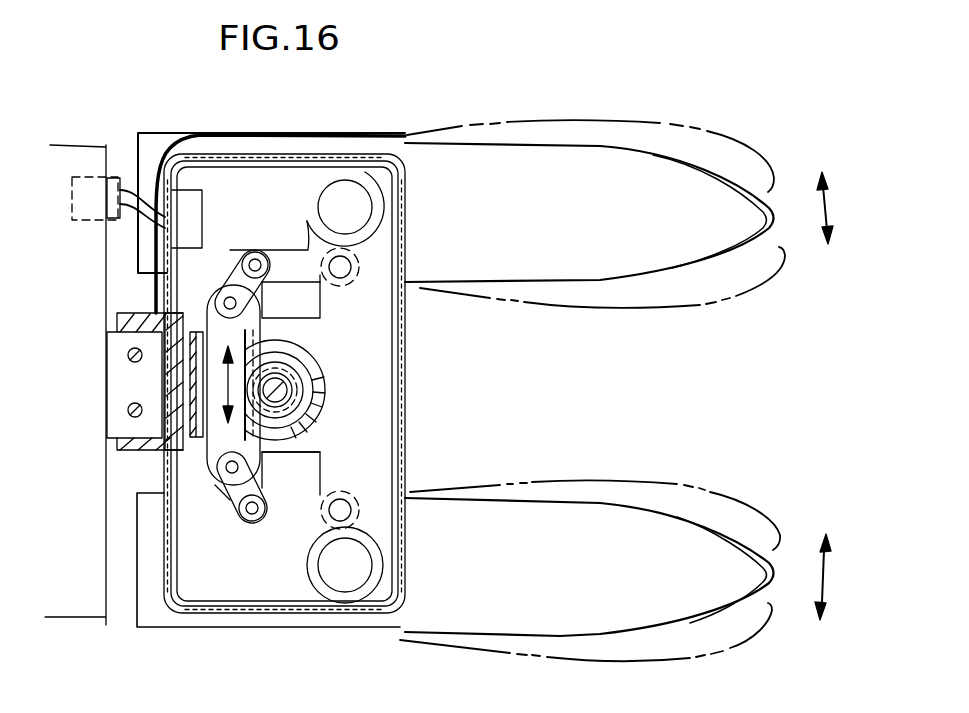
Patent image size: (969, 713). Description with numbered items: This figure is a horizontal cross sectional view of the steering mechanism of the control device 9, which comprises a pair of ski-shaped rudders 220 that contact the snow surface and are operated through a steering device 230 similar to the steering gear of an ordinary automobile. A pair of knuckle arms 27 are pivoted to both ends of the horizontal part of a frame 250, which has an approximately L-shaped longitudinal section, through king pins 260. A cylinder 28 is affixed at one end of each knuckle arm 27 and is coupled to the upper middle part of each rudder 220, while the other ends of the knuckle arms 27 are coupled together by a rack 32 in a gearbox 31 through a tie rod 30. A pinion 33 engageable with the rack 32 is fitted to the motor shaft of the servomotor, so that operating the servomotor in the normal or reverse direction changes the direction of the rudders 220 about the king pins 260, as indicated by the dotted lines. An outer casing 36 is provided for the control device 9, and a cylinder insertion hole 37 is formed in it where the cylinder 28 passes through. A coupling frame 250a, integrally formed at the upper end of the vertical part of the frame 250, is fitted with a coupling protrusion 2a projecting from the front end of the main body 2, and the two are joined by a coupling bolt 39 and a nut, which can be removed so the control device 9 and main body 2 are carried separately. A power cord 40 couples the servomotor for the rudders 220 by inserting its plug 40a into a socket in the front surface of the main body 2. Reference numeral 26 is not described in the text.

The main body 2 is at (88, 580).
The coupling protrusion 2a is at (123, 377).
The control device 9 is at (436, 119).
The lower pin 26 is at (340, 508).
The knuckle arm 27 is at (287, 262).
The cylinder 28 is at (338, 197).
The tie rod 30 is at (235, 273).
The gearbox 31 is at (325, 407).
The rack 32 is at (217, 482).
The pinion 33 is at (340, 395).
The outer casing 36 is at (407, 240).
The cylinder insertion hole 37 is at (307, 207).
The coupling bolt 39 is at (128, 354).
The power cord 40 is at (147, 205).
The plug 40a is at (113, 190).
The ski-shaped rudder 220 is at (578, 173).
The steering device 230 is at (238, 553).
The frame 250 is at (345, 397).
The coupling frame 250a is at (140, 440).
The king pin 260 is at (263, 282).